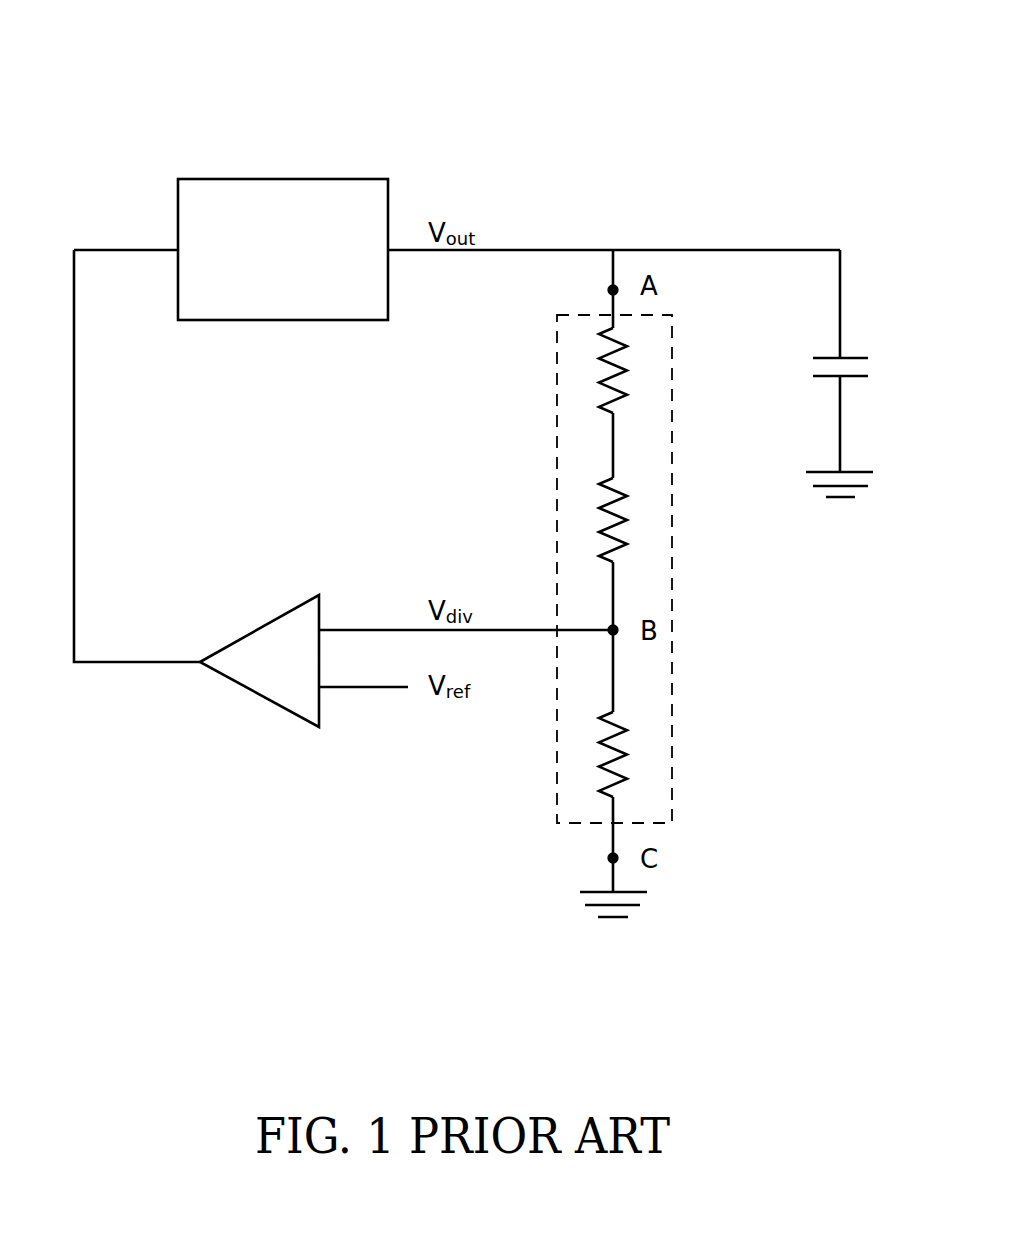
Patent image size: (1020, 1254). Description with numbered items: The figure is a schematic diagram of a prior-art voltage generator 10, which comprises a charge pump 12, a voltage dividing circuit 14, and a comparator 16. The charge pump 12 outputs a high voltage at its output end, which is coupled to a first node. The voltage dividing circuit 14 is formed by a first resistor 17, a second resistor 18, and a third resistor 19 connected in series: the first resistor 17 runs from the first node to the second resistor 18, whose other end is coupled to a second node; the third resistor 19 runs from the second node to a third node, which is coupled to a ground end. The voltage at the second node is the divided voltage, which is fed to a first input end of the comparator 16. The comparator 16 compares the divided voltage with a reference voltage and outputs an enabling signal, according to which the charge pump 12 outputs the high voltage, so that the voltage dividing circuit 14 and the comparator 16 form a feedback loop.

The voltage generator 10 is at (736, 86).
The charge pump 12 is at (362, 178).
The voltage dividing circuit 14 is at (672, 358).
The comparator 16 is at (260, 627).
The first resistor 17 is at (640, 381).
The second resistor 18 is at (640, 514).
The third resistor 19 is at (640, 749).